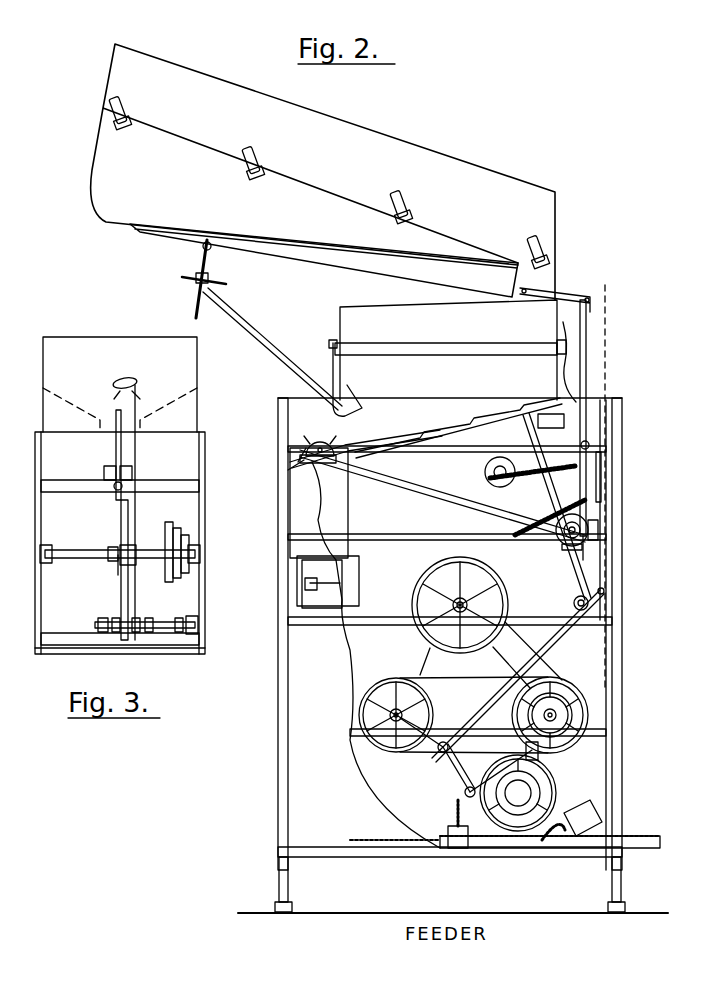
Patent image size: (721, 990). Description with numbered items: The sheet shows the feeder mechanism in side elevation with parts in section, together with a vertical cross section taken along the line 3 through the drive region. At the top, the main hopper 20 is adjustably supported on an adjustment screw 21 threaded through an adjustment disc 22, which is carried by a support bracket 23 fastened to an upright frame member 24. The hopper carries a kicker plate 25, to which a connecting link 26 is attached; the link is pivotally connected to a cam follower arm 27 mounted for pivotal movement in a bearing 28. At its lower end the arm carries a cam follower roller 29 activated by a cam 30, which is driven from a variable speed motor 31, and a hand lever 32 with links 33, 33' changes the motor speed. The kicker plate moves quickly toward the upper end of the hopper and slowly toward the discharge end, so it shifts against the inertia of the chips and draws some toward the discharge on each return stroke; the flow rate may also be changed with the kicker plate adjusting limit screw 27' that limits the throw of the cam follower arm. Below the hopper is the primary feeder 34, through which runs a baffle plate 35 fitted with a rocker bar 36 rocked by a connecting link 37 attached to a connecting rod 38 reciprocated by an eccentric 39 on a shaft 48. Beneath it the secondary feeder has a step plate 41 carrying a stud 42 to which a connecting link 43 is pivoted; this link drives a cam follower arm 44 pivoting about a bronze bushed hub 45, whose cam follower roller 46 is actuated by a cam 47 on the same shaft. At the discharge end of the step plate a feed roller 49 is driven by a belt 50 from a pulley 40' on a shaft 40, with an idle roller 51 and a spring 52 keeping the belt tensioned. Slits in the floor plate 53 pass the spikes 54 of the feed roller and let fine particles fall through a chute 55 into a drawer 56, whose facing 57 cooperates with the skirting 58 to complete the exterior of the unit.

In FIG. 2, the section line 3 is at (616, 297).
In FIG. 3, the section line 3 is at (120, 543).
In FIG. 2, the main hopper 20 is at (96, 212).
In FIG. 2, the adjustment screw 21 is at (212, 270).
In FIG. 2, the adjustment disc 22 is at (191, 283).
In FIG. 2, the support bracket 23 is at (250, 332).
In FIG. 2, the upright frame member 24 is at (278, 514).
In FIG. 2, the kicker plate 25 is at (370, 250).
In FIG. 2, the connecting link 26 is at (572, 293).
In FIG. 2, the cam follower arm 27 is at (600, 418).
In FIG. 3, the cam follower arm 27 is at (98, 455).
In FIG. 2, the kicker plate adjusting limit screw 27' is at (532, 482).
In FIG. 3, the kicker plate adjusting limit screw 27' is at (102, 497).
In FIG. 2, the bearing 28 is at (594, 440).
In FIG. 3, the bearing 28 is at (133, 470).
In FIG. 2, the cam follower roller 29 is at (599, 518).
In FIG. 3, the cam follower roller 29 is at (108, 548).
In FIG. 2, the cam 30 is at (575, 536).
In FIG. 3, the cam 30 is at (112, 562).
In FIG. 2, the variable speed motor 31 is at (552, 781).
In FIG. 2, the hand lever 32 is at (552, 637).
In FIG. 2, the link 33 is at (437, 757).
In FIG. 2, the link 33' is at (500, 767).
In FIG. 2, the primary feeder 34 is at (375, 308).
In FIG. 3, the primary feeder 34 is at (43, 350).
In FIG. 2, the baffle plate 35 is at (405, 351).
In FIG. 3, the baffle plate 35 is at (112, 384).
In FIG. 2, the rocker bar 36 is at (333, 372).
In FIG. 2, the connecting link 37 is at (562, 340).
In FIG. 3, the connecting link 37 is at (125, 378).
In FIG. 2, the connecting rod 38 is at (578, 373).
In FIG. 3, the connecting rod 38 is at (136, 442).
In FIG. 3, the eccentric 39 is at (137, 632).
In FIG. 2, the shaft 40 is at (610, 531).
In FIG. 3, the shaft 40 is at (120, 545).
In FIG. 2, the pulley 40' is at (615, 522).
In FIG. 3, the pulley 40' is at (208, 606).
In FIG. 2, the step plate 41 is at (418, 428).
In FIG. 2, the stud 42 is at (552, 429).
In FIG. 2, the connecting link 43 is at (527, 430).
In FIG. 2, the cam follower arm 44 is at (550, 501).
In FIG. 3, the cam follower arm 44 is at (120, 600).
In FIG. 3, the bronze bushed hub 45 is at (138, 545).
In FIG. 3, the cam follower roller 46 is at (100, 632).
In FIG. 3, the cam 47 is at (116, 632).
In FIG. 2, the shaft 48 is at (590, 602).
In FIG. 3, the shaft 48 is at (160, 622).
In FIG. 2, the feed roller 49 is at (312, 441).
In FIG. 2, the belt 50 is at (418, 482).
In FIG. 3, the belt 50 is at (172, 530).
In FIG. 2, the idle roller 51 is at (488, 470).
In FIG. 2, the spring 52 is at (600, 477).
In FIG. 2, the floor plate 53 is at (338, 446).
In FIG. 2, the spikes 54 is at (318, 436).
In FIG. 2, the chute 55 is at (342, 521).
In FIG. 2, the drawer 56 is at (350, 580).
In FIG. 2, the facing 57 is at (320, 600).
In FIG. 2, the skirting 58 is at (358, 645).